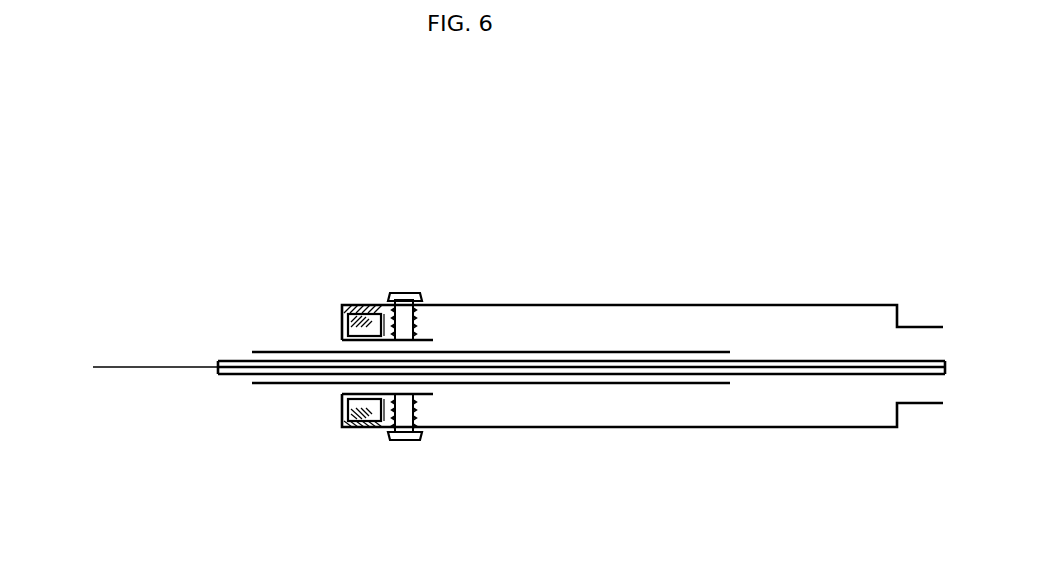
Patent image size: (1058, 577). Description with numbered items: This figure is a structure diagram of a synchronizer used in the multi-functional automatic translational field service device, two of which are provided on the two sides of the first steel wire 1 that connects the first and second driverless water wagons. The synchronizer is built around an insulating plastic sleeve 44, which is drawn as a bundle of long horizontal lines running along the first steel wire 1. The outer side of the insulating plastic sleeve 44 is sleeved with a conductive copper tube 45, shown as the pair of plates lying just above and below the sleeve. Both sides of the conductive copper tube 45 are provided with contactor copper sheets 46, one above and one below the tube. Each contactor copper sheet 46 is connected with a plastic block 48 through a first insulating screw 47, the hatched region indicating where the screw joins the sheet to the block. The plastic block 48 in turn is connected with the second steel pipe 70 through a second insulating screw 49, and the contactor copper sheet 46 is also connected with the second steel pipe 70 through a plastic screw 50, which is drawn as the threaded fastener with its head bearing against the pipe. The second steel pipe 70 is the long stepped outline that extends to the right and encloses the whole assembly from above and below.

The first steel wire 1 is at (133, 368).
The insulating plastic sleeve 44 is at (230, 378).
The conductive copper tube 45 is at (303, 387).
The contactor copper sheet 46 is at (343, 338).
The first insulating screw 47 is at (340, 326).
The plastic block 48 is at (397, 295).
The second insulating screw 49 is at (350, 307).
The plastic screw 50 is at (412, 297).
The second steel pipe 70 is at (538, 303).